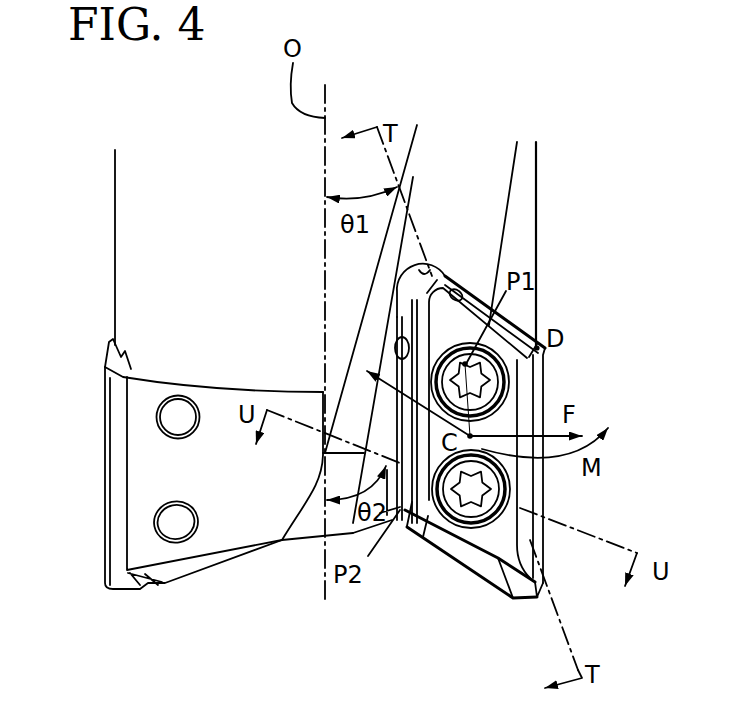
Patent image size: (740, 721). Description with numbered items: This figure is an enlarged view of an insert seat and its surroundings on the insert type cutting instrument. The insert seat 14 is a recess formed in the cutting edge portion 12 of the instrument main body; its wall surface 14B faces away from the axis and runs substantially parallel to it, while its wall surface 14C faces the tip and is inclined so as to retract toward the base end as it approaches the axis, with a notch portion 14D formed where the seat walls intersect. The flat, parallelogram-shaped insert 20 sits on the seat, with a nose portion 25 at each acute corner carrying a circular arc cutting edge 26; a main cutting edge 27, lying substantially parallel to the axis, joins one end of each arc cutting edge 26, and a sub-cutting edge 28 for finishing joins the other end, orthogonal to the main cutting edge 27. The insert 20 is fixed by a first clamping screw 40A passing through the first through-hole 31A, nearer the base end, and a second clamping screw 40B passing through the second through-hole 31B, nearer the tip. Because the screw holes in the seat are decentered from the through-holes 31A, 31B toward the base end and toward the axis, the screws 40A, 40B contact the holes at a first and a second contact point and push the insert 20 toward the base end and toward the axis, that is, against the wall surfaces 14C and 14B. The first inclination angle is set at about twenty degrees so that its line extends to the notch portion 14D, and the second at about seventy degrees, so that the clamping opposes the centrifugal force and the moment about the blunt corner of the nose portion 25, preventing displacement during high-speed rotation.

The cutting edge portion 12 is at (140, 262).
The insert seat 14 is at (374, 269).
The wall surface 14B is at (397, 350).
The wall surface 14C is at (456, 292).
The notch portion 14D is at (426, 268).
The insert 20 is at (504, 468).
The nose portion 25 is at (520, 612).
The circular arc cutting edge 26 is at (538, 600).
The main cutting edge 27 is at (546, 553).
The sub-cutting edge 28 is at (513, 598).
The first through-hole 31A is at (497, 397).
The second through-hole 31B is at (477, 530).
The first clamping screw 40A is at (544, 379).
The second clamping screw 40B is at (430, 555).